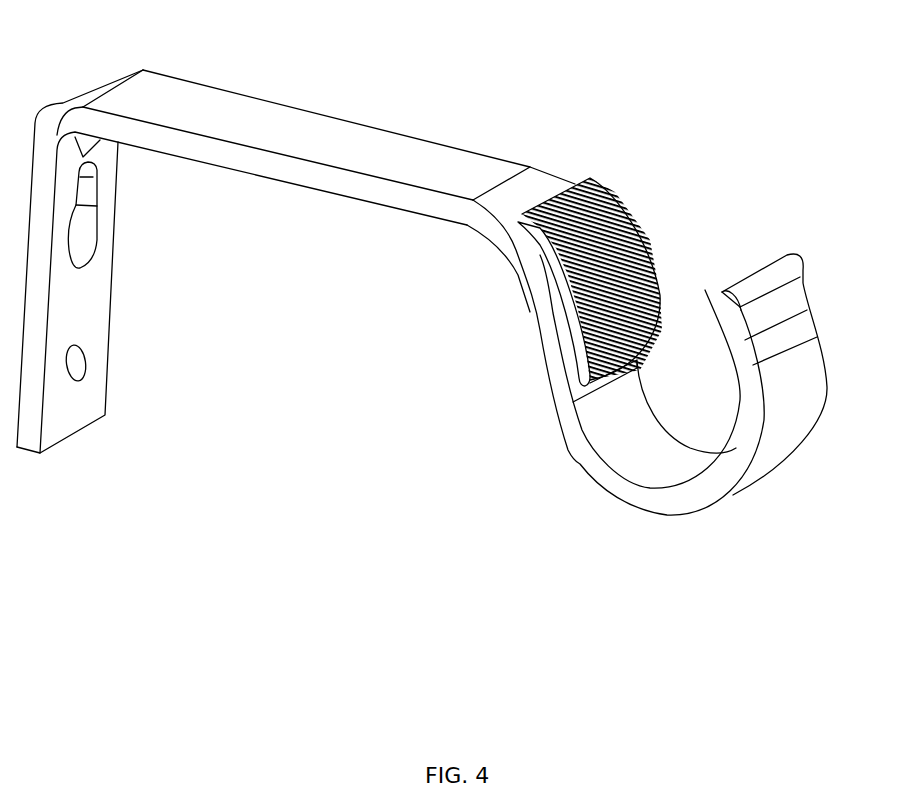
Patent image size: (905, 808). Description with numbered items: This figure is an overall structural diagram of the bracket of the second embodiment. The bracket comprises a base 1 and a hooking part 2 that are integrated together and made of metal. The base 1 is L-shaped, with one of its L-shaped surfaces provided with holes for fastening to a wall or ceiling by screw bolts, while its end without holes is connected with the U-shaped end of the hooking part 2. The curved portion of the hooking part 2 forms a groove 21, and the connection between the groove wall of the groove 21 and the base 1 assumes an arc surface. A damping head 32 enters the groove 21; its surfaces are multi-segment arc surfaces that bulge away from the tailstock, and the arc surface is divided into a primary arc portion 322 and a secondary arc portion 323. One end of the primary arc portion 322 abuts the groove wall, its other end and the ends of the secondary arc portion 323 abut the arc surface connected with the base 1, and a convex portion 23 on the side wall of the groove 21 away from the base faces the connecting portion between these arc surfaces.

The base 1 is at (292, 143).
The hooking part 2 is at (590, 452).
The groove 21 is at (677, 268).
The convex portion 23 is at (705, 290).
The damping head 32 is at (501, 291).
The primary arc portion 322 is at (540, 232).
The secondary arc portion 323 is at (577, 297).